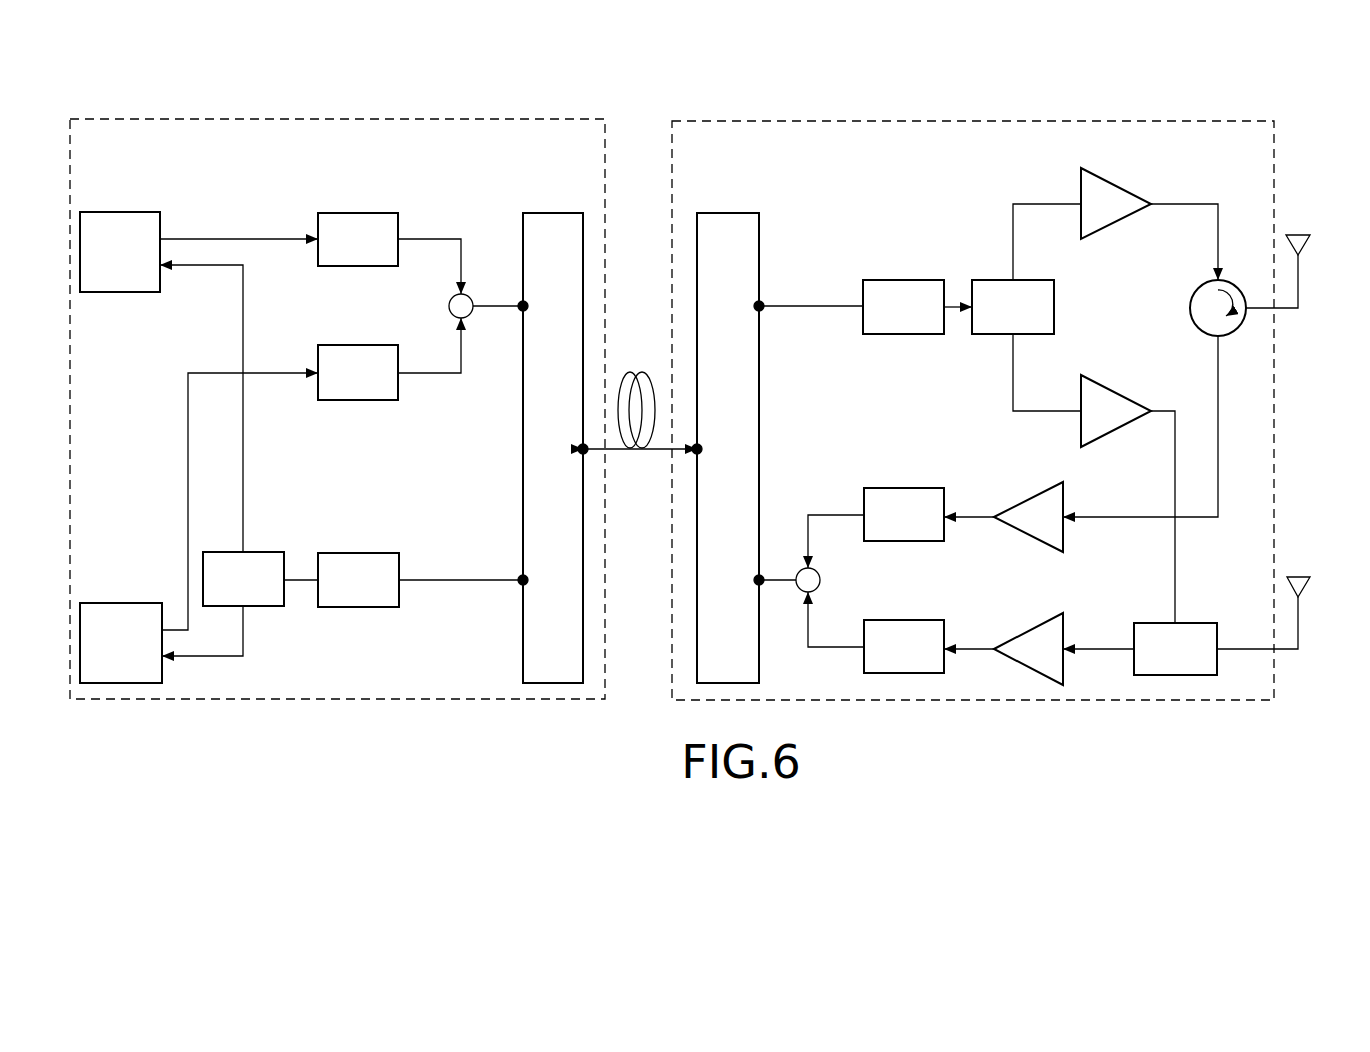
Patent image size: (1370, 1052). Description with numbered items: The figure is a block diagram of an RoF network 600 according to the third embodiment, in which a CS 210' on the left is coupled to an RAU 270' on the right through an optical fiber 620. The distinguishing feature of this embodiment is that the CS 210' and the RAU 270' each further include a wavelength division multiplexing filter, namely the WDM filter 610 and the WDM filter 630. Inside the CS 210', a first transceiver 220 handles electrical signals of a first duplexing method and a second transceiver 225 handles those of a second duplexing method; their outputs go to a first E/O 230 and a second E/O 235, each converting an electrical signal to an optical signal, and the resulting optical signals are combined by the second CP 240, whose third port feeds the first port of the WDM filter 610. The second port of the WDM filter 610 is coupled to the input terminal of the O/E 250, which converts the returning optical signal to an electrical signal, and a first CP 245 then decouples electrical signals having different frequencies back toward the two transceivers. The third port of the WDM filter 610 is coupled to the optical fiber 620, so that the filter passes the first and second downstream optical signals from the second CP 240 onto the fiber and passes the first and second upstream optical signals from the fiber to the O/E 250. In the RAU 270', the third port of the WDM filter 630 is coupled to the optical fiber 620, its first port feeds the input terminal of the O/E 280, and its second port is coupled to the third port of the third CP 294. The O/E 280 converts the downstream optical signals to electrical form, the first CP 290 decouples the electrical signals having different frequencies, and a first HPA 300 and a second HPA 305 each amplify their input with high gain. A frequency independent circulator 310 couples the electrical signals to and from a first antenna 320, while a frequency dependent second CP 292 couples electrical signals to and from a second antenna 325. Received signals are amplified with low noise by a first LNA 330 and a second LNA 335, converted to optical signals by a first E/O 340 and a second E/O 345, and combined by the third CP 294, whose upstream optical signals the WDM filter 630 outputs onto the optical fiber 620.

The RoF network 600 is at (692, 31).
The CS 210' is at (337, 387).
The RAU 270' is at (973, 387).
The first transceiver 220 is at (120, 212).
The second transceiver 225 is at (120, 603).
The first electric-to-optical converter 230 is at (357, 213).
The second electric-to-optical converter 235 is at (357, 345).
The second coupler 240 is at (449, 308).
The first coupler 245 is at (216, 551).
The optical-to-electric converter 250 is at (357, 552).
The wavelength division multiplexing filter 610 is at (552, 213).
The optical fiber 620 is at (642, 372).
The wavelength division multiplexing filter 630 is at (727, 213).
The optical-to-electric converter 280 is at (902, 280).
The first coupler 290 is at (1054, 307).
The second coupler 292 is at (1149, 622).
The third coupler 294 is at (820, 580).
The first high power amplifier 300 is at (1112, 184).
The second high power amplifier 305 is at (1112, 390).
The circulator 310 is at (1190, 308).
The first antenna 320 is at (1306, 240).
The second antenna 325 is at (1306, 582).
The first low noise amplifier 330 is at (1027, 490).
The second low noise amplifier 335 is at (1027, 624).
The first electric-to-optical converter 340 is at (903, 487).
The second electric-to-optical converter 345 is at (903, 619).